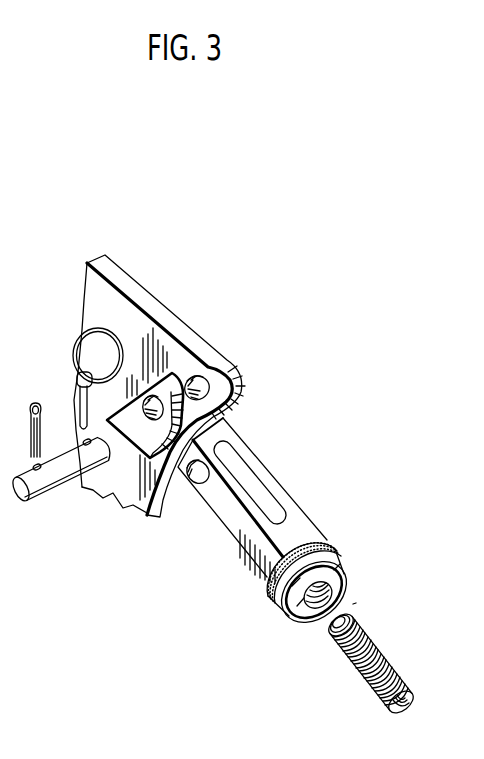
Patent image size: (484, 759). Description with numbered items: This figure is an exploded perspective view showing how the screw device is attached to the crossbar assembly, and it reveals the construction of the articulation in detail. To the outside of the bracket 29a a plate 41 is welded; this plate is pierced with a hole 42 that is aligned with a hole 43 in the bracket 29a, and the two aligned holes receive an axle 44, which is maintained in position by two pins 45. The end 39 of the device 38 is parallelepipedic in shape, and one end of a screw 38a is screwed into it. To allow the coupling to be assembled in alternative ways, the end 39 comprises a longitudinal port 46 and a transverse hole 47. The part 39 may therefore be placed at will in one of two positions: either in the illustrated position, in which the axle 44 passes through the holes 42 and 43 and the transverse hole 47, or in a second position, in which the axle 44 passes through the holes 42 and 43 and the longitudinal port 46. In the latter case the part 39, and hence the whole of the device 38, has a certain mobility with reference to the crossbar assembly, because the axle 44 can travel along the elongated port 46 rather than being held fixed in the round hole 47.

The bracket 29a is at (180, 367).
The device 38 is at (354, 604).
The screw 38a is at (393, 667).
The end of the device 39 is at (265, 526).
The plate 41 is at (114, 463).
The hole 42 is at (172, 373).
The hole 43 is at (209, 391).
The axle 44 is at (35, 502).
The pins 45 is at (70, 394).
The longitudinal port 46 is at (243, 477).
The transverse hole 47 is at (193, 489).